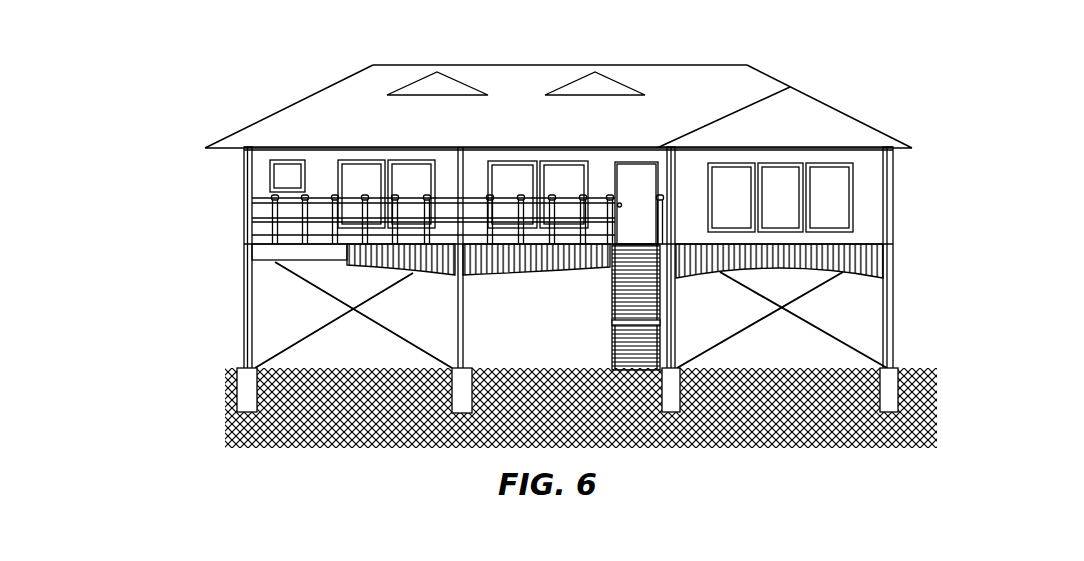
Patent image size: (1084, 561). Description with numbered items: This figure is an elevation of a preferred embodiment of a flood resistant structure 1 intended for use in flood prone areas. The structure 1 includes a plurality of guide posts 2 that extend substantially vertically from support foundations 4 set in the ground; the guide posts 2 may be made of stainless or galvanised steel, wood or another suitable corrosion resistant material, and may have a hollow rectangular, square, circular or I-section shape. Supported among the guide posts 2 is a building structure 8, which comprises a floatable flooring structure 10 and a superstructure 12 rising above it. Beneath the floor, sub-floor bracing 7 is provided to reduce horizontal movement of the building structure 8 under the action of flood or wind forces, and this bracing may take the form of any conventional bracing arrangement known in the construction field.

The flood resistant structure 1 is at (514, 256).
The guide posts 2 is at (235, 285).
The support foundations 4 is at (223, 390).
The sub-floor bracing 7 is at (280, 343).
The building structure 8 is at (170, 180).
The floatable flooring structure 10 is at (272, 252).
The superstructure 12 is at (229, 166).